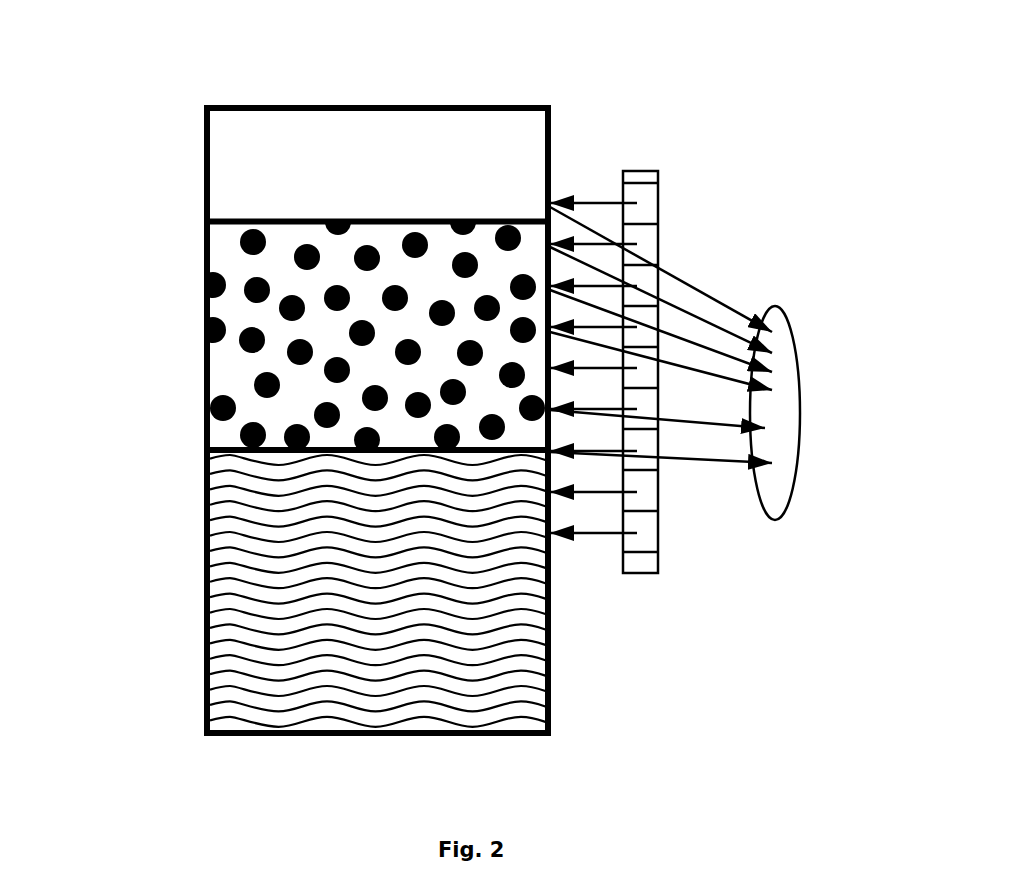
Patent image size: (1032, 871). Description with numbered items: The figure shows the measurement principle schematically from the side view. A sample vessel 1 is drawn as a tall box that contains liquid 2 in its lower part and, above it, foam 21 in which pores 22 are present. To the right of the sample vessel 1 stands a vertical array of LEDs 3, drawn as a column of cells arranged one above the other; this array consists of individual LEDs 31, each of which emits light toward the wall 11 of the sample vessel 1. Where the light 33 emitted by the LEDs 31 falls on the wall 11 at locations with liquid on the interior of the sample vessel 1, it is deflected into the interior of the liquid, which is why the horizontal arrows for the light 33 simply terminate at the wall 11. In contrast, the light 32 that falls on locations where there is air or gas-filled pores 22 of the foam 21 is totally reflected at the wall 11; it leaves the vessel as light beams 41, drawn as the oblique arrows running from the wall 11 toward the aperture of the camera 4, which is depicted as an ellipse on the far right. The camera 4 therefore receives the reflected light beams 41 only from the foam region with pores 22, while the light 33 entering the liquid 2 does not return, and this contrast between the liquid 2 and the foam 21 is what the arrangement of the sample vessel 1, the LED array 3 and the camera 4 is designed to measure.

The sample vessel 1 is at (307, 97).
The wall 11 is at (203, 182).
The liquid 2 is at (237, 613).
The foam 21 is at (295, 331).
The pores 22 is at (253, 243).
The vertical array of LEDs 3 is at (706, 303).
The individual LEDs 31 is at (643, 238).
The light 32 is at (593, 201).
The light 33 is at (590, 368).
The camera 4 is at (782, 433).
The light beams 41 is at (690, 313).